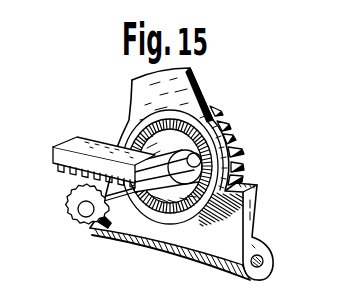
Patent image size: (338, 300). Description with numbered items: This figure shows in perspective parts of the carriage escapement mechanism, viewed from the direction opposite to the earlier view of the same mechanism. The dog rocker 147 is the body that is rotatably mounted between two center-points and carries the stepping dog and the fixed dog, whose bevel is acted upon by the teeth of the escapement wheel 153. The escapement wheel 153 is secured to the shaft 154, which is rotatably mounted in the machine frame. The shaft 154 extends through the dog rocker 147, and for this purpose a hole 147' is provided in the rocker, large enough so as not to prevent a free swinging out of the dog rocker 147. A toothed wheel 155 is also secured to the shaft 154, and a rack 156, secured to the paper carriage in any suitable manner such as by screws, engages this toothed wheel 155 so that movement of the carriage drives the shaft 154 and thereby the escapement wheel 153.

The dog rocker 147 is at (192, 174).
The hole 147' is at (152, 164).
The escapement wheel 153 is at (237, 139).
The shaft 154 is at (147, 195).
The toothed wheel 155 is at (76, 197).
The rack 156 is at (55, 162).